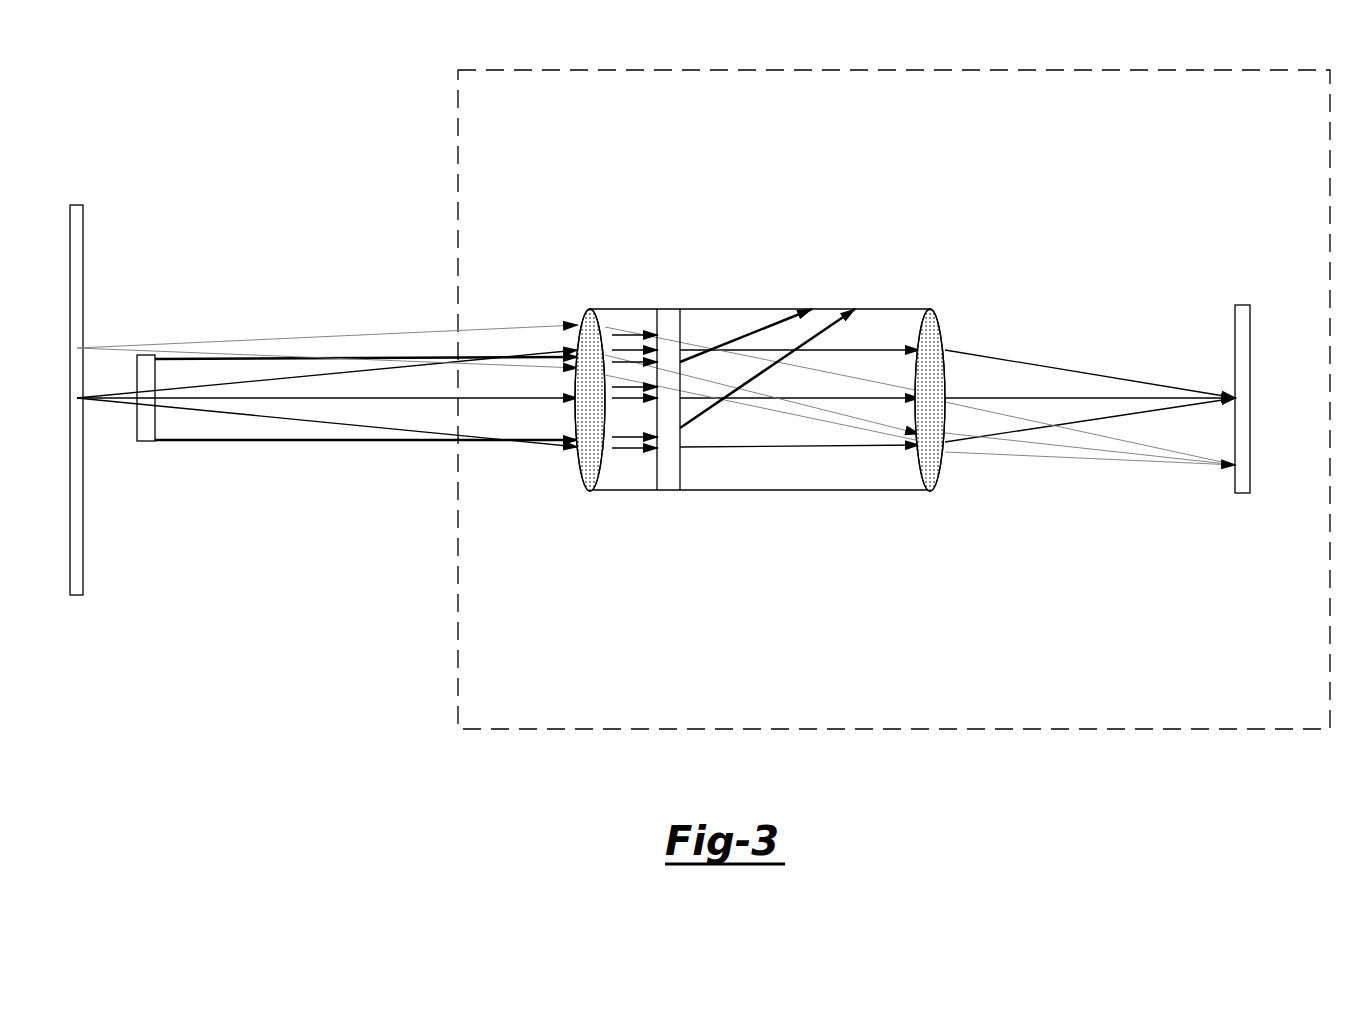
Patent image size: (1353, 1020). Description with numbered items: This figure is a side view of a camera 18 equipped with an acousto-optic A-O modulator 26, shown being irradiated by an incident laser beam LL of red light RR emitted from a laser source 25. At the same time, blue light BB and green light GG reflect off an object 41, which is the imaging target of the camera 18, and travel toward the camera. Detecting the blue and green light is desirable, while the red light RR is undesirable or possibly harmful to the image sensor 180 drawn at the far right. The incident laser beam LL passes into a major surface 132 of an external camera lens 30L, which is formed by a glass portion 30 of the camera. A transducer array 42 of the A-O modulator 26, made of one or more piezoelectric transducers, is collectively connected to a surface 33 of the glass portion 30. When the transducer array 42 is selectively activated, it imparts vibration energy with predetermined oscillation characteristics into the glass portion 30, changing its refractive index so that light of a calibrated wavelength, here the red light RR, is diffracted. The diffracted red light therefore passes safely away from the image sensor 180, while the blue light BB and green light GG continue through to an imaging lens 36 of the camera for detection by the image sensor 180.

The camera 18 is at (568, 70).
The A-O modulator 26 is at (690, 240).
The major surface 132 is at (583, 313).
The glass portion 30 is at (580, 468).
The external camera lens 30L is at (585, 512).
The surface 33 is at (658, 481).
The transducer array 42 is at (668, 490).
The imaging lens 36 is at (920, 462).
The image sensor 180 is at (1243, 493).
The object 41 is at (77, 595).
The laser source 25 is at (147, 441).
The red light RR is at (165, 352).
The green light GG is at (100, 420).
The blue light BB is at (287, 322).
The incident laser beam LL is at (295, 475).